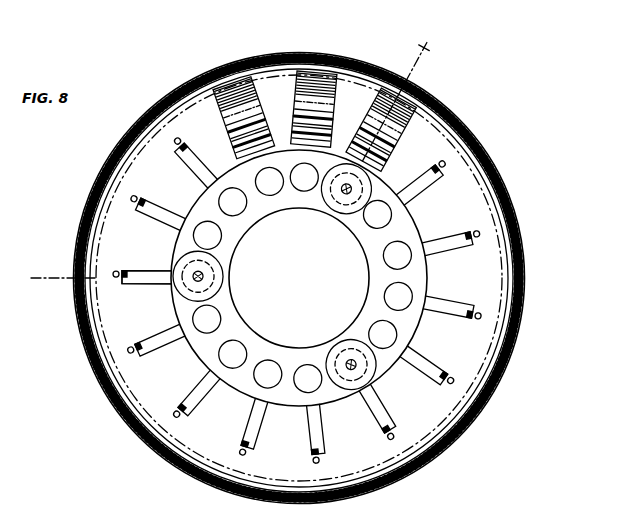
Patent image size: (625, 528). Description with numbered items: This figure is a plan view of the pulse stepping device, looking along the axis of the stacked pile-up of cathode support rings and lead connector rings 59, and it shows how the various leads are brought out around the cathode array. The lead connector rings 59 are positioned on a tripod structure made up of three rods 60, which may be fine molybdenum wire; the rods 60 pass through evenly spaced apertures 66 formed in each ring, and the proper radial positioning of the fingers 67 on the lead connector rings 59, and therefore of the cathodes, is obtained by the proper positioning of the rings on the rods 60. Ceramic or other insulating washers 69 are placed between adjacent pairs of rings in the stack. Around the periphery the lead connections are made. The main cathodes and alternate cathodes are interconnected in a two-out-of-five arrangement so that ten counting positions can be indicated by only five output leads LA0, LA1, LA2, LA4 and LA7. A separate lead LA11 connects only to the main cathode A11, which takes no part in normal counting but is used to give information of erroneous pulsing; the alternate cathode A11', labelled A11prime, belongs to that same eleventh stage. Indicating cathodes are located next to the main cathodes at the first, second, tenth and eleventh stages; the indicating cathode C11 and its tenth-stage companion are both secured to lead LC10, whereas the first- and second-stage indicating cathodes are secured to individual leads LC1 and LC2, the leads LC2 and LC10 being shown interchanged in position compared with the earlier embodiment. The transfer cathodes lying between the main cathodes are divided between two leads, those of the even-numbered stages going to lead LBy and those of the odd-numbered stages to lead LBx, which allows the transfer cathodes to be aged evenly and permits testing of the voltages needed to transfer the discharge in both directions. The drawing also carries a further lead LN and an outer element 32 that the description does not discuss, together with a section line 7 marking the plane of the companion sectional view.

The housing ring 32 is at (500, 173).
The lead connector rings 59 is at (197, 348).
The rods 60 is at (345, 192).
The apertures 66 is at (302, 183).
The fingers 67 is at (142, 276).
The insulating washers 69 is at (185, 297).
The section line 7- 7 is at (434, 68).
The lead LA11 is at (442, 167).
The lead LA7 is at (474, 236).
The lead LA4 is at (476, 311).
The lead LA2 is at (447, 381).
The lead LA1 is at (394, 435).
The lead LA0 is at (320, 461).
The lead LBx is at (247, 455).
The lead LBy is at (181, 418).
The neutral lead terminal LN is at (134, 357).
The lead LC10 is at (117, 278).
The lead LC1 is at (133, 202).
The lead LC2 is at (175, 145).
The alternate cathode A11prime is at (239, 86).
The main cathode A11 is at (297, 81).
The indicating cathode C11 is at (381, 101).